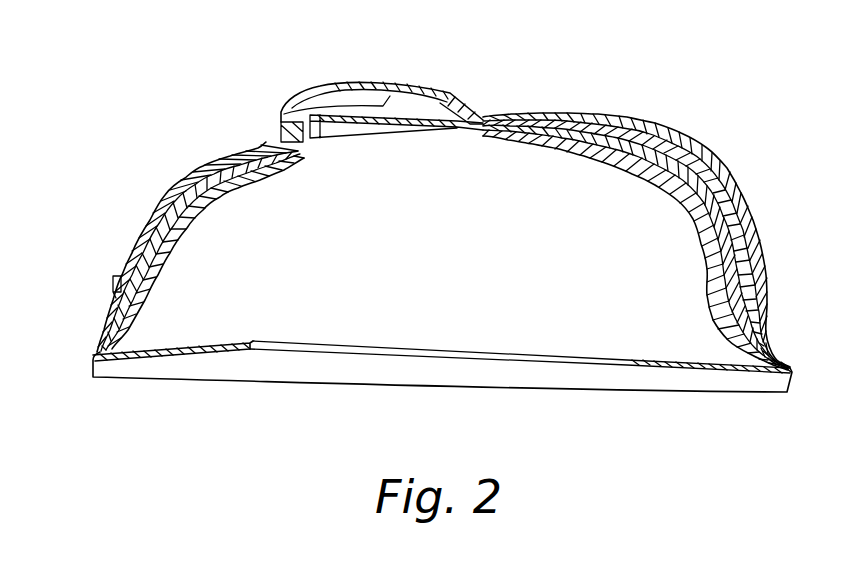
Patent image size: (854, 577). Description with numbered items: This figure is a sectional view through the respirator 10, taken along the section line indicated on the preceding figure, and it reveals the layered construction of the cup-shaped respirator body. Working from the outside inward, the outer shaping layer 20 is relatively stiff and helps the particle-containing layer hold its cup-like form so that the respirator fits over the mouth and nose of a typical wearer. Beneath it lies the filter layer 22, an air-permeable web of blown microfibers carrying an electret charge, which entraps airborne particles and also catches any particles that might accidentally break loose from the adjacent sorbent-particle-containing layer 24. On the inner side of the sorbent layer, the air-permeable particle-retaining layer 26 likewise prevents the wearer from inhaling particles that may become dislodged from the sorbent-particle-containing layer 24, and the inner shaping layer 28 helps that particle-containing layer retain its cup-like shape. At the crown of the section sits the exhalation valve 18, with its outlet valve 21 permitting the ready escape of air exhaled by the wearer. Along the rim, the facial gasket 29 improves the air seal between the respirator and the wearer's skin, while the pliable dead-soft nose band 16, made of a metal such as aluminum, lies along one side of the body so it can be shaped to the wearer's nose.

The respirator 10 is at (665, 119).
The nose band 16 is at (115, 281).
The exhalation valve 18 is at (414, 93).
The outer shaping layer 20 is at (200, 167).
The outlet valve 21 is at (409, 122).
The filter layer 22 is at (170, 193).
The sorbent-particle-containing layer 24 is at (148, 235).
The air-permeable particle-retaining layer 26 is at (160, 250).
The inner shaping layer 28 is at (150, 290).
The facial gasket 29 is at (672, 366).